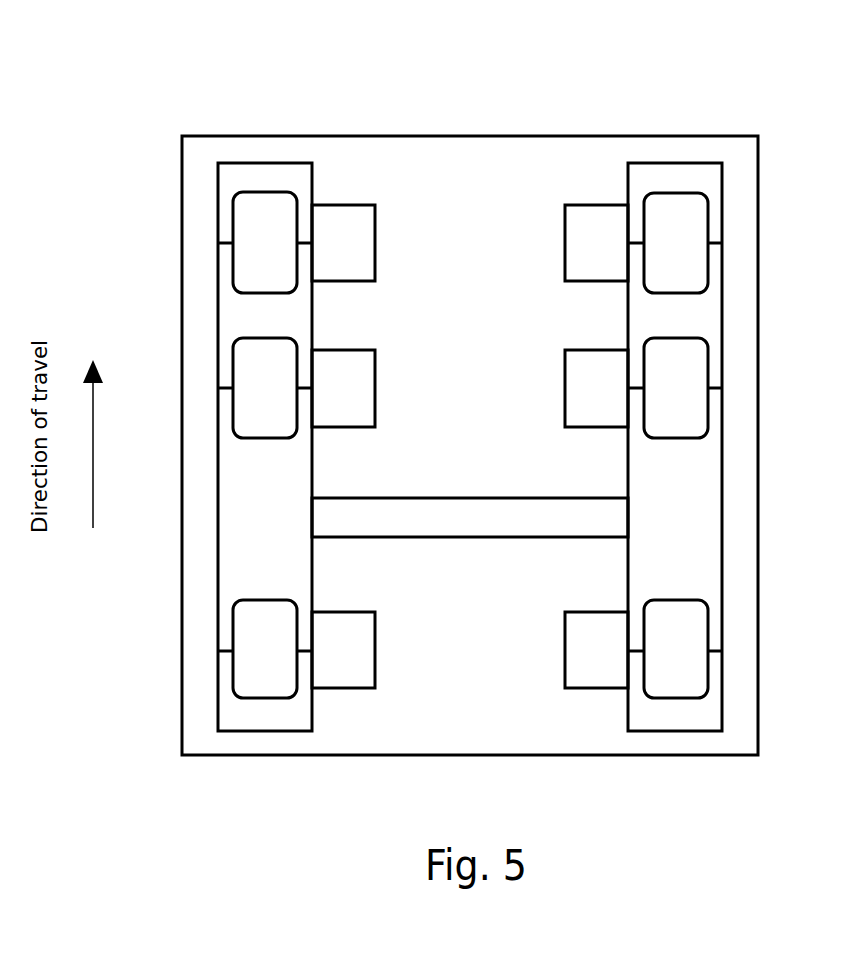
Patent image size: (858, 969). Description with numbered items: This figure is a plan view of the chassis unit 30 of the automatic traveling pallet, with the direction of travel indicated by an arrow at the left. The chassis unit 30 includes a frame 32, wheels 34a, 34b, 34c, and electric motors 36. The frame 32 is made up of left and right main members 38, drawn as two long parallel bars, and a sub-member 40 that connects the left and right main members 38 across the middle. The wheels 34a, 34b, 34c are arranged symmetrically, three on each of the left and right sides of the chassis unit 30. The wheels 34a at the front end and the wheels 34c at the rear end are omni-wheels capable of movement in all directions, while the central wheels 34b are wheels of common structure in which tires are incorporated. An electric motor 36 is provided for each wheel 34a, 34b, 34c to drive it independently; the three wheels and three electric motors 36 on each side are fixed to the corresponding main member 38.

The chassis unit 30 is at (740, 111).
The frame 32 is at (543, 160).
The wheels of the front end 34a is at (250, 192).
The central wheels 34b is at (250, 338).
The wheels of the rear end 34c is at (250, 600).
The electric motors 36 is at (335, 282).
The main members 38 is at (316, 177).
The sub-member 40 is at (439, 498).